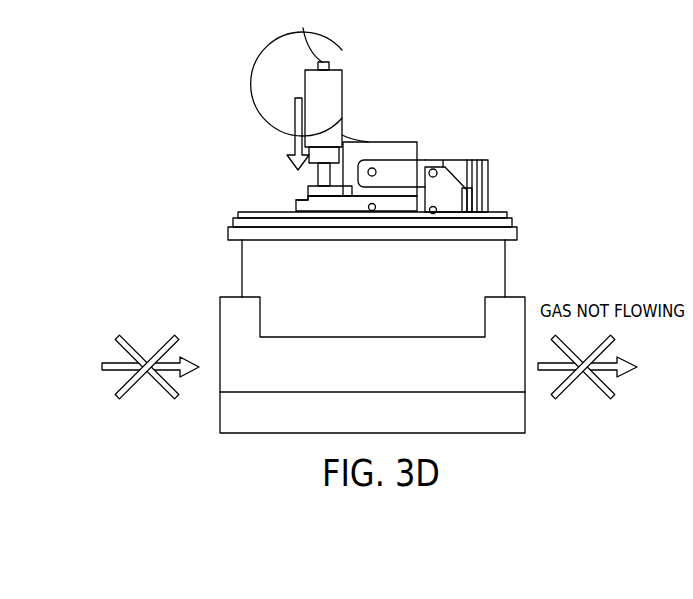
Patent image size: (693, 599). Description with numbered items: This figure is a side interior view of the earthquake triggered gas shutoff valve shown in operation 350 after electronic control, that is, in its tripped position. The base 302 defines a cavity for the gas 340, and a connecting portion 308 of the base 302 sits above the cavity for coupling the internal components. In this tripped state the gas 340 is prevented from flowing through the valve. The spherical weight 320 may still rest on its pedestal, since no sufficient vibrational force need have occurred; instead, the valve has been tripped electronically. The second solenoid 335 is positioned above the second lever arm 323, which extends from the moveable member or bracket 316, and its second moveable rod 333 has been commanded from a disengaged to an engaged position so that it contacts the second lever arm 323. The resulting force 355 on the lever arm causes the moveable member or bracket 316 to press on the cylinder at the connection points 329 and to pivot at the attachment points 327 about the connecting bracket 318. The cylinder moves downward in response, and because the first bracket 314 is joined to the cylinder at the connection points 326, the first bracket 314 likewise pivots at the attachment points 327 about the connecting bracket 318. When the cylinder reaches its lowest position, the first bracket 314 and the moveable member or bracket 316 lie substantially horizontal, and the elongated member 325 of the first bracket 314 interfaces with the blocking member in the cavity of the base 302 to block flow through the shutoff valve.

The base 302 is at (220, 314).
The connecting portion 308 is at (228, 232).
The first bracket 314 is at (462, 164).
The moveable member or bracket 316 is at (296, 205).
The connecting bracket 318 is at (443, 172).
The weight 320 is at (398, 52).
The second lever arm 323 is at (306, 190).
The elongated member 325 is at (485, 197).
The connection points 326 is at (373, 168).
The attachment points 327 is at (432, 178).
The connection points 329 is at (372, 211).
The second moveable rod 333 is at (305, 33).
The second solenoid 335 is at (291, 71).
The gas 340 is at (103, 371).
The operation 350 is at (226, 80).
The force 355 is at (294, 112).